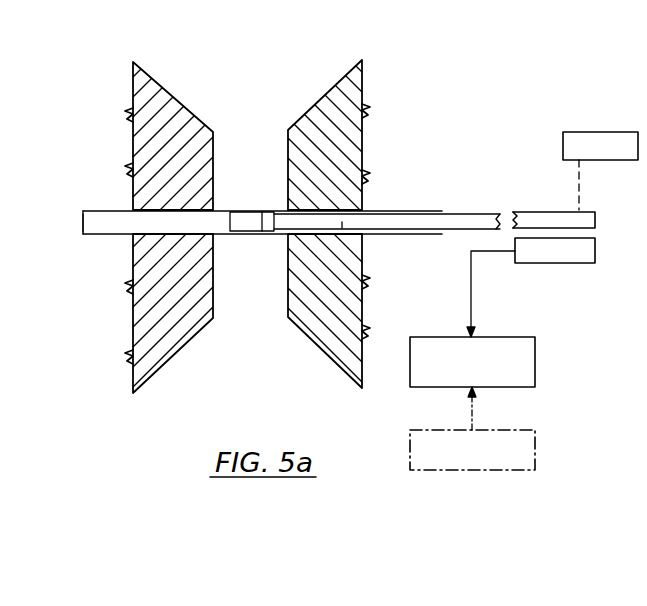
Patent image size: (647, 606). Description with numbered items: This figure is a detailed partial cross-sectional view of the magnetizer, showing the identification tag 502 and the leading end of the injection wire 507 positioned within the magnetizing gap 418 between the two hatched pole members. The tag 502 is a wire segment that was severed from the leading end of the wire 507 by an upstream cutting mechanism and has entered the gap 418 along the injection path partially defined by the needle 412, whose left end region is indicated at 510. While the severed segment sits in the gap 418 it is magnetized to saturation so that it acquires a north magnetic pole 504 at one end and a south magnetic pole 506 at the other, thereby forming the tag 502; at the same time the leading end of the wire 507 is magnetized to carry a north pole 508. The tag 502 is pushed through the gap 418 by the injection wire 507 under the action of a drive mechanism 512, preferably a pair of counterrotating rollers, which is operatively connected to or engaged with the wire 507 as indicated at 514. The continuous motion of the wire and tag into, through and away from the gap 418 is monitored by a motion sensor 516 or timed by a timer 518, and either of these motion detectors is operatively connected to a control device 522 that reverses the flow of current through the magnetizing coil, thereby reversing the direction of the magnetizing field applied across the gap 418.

The magnetizing gap 418 is at (215, 87).
The needle 412 is at (108, 207).
The shaft end 510 is at (84, 218).
The north magnetic pole 504 is at (233, 210).
The identification tag 502 is at (247, 231).
The south magnetic pole 506 is at (260, 232).
The north pole 508 is at (272, 214).
The injection wire 507 is at (342, 220).
The drive mechanism 512 is at (592, 131).
The operative connection of drive to wire 514 is at (579, 186).
The motion sensor 516 is at (562, 263).
The control device 522 is at (536, 362).
The timer 518 is at (410, 450).